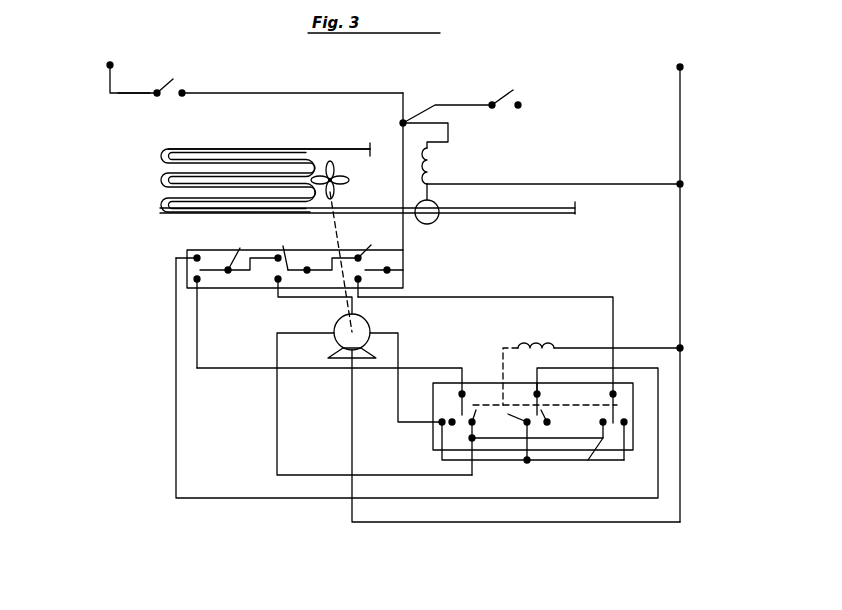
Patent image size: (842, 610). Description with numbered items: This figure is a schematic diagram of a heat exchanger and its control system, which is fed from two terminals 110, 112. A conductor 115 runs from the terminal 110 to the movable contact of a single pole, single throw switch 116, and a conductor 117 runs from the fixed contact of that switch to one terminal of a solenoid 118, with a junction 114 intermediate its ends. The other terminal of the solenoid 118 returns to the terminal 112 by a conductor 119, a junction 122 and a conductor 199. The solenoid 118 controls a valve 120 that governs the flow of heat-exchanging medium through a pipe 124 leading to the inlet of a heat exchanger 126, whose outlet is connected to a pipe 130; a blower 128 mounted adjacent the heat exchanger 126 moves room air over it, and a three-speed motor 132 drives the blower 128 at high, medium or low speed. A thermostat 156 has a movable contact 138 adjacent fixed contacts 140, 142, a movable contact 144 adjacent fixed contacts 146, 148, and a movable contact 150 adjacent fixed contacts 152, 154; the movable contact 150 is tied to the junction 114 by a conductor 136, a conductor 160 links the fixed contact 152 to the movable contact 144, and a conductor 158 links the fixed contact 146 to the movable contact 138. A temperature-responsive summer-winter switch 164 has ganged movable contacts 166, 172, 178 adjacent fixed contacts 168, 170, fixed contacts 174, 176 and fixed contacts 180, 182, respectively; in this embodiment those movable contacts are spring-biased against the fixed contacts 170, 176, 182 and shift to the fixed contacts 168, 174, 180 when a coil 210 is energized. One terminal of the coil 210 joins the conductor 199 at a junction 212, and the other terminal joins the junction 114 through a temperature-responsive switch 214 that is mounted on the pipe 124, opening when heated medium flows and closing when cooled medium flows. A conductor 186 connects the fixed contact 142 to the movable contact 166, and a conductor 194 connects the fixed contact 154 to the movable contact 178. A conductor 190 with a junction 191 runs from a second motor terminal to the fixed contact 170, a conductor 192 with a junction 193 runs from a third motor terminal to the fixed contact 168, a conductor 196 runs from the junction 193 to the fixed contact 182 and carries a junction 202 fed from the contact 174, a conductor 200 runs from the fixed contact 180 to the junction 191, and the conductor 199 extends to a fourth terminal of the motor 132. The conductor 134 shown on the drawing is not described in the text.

The terminal 110 is at (107, 65).
The terminal 112 is at (683, 67).
The junction 114 is at (401, 123).
The conductor 115 is at (135, 95).
The single pole, single throw switch 116 is at (174, 81).
The conductor 117 is at (291, 92).
The solenoid 118 is at (431, 154).
The conductor 119 is at (576, 184).
The valve 120 is at (436, 221).
The junction 122 is at (683, 184).
The pipe 124 is at (539, 221).
The heat exchanger 126 is at (166, 180).
The blower 128 is at (345, 181).
The pipe 130 is at (348, 146).
The three-speed motor 132 is at (371, 330).
The conductor 134 is at (175, 381).
The conductor 136 is at (404, 247).
The movable contact 138 is at (247, 250).
The fixed contact 140 is at (194, 250).
The fixed contact 142 is at (198, 283).
The movable contact 144 is at (304, 251).
The fixed contact 146 is at (292, 250).
The fixed contact 148 is at (273, 288).
The movable contact 150 is at (391, 272).
The fixed contact 152 is at (368, 250).
The fixed contact 154 is at (362, 290).
The thermostat 156 is at (186, 251).
The conductor 158 is at (249, 273).
The conductor 160 is at (327, 273).
The temperature-responsive summer-winter switch 164 is at (431, 448).
The movable contact 166 is at (455, 403).
The fixed contact 168 is at (449, 420).
The fixed contact 170 is at (489, 413).
The movable contact 172 is at (554, 399).
The fixed contact 174 is at (523, 413).
The fixed contact 176 is at (560, 413).
The movable contact 178 is at (612, 400).
The fixed contact 180 is at (601, 423).
The fixed contact 182 is at (627, 422).
The conductor 186 is at (237, 370).
The conductor 190 is at (276, 414).
The junction 191 is at (536, 448).
The conductor 192 is at (397, 399).
The junction 193 is at (440, 425).
The conductor 194 is at (581, 297).
The conductor 196 is at (512, 464).
The conductor 199 is at (385, 527).
The conductor 200 is at (590, 470).
The junction 202 is at (522, 466).
The coil 210 is at (528, 347).
The junction 212 is at (683, 348).
The temperature-responsive switch 214 is at (510, 95).